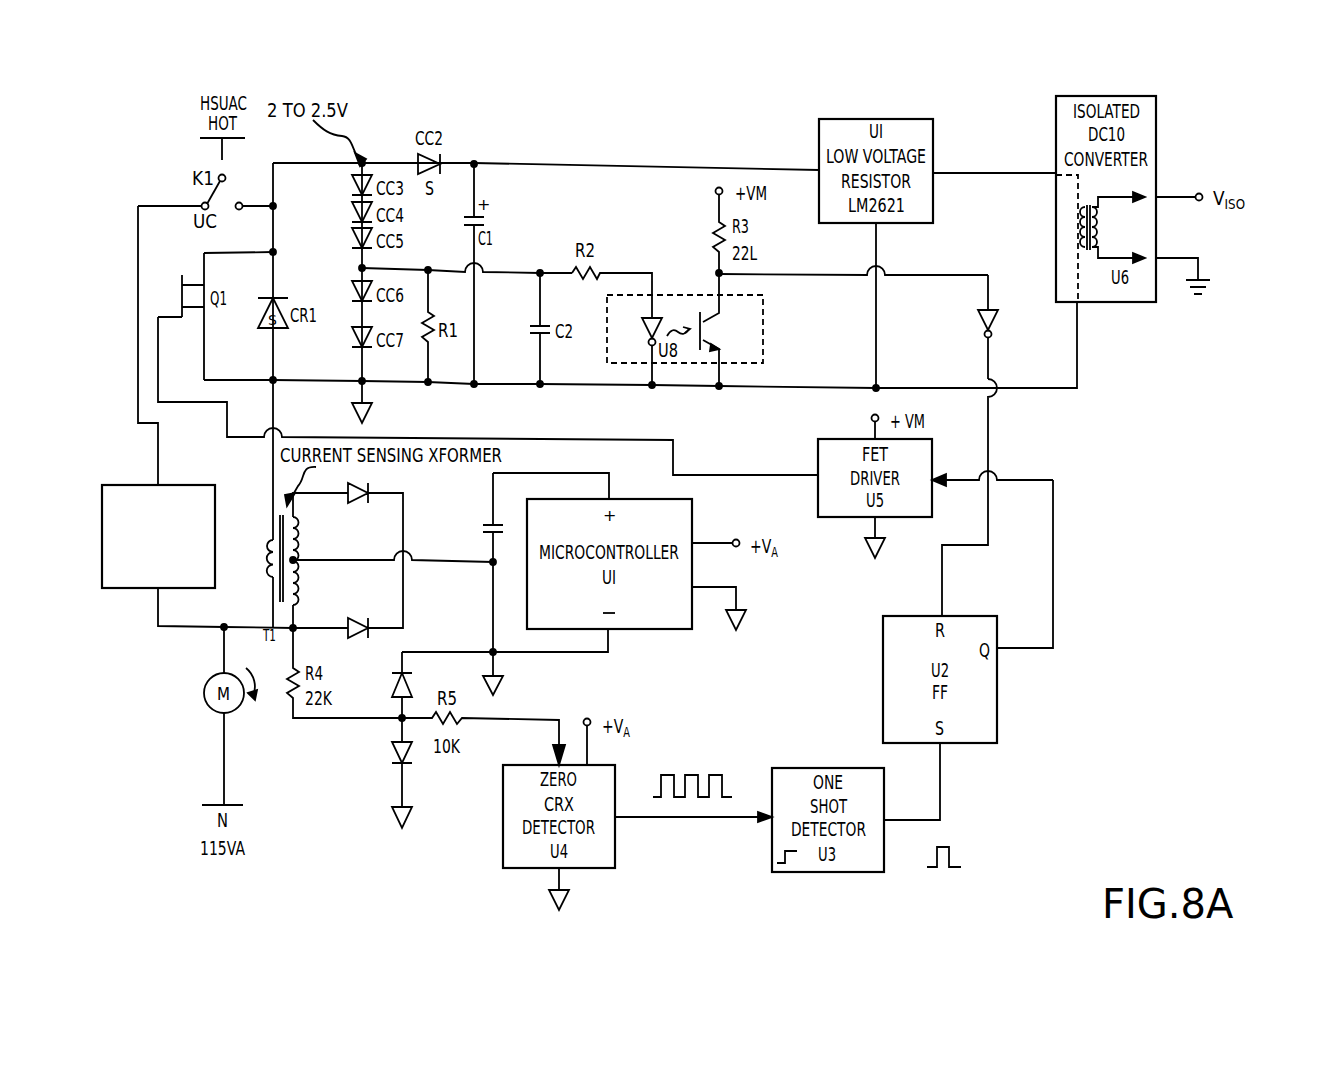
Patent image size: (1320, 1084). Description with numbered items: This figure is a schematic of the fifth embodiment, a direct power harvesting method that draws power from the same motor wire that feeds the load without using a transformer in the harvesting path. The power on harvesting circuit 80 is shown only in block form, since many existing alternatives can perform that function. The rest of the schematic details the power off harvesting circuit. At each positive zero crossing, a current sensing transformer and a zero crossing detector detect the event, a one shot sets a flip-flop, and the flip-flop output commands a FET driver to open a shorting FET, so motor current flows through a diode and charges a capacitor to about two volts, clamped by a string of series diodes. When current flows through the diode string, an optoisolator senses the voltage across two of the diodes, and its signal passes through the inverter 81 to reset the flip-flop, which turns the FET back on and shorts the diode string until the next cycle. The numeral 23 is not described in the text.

The power on harvesting circuit 80 is at (137, 588).
The inverter 81 is at (978, 326).
The capacitor 23 is at (499, 562).